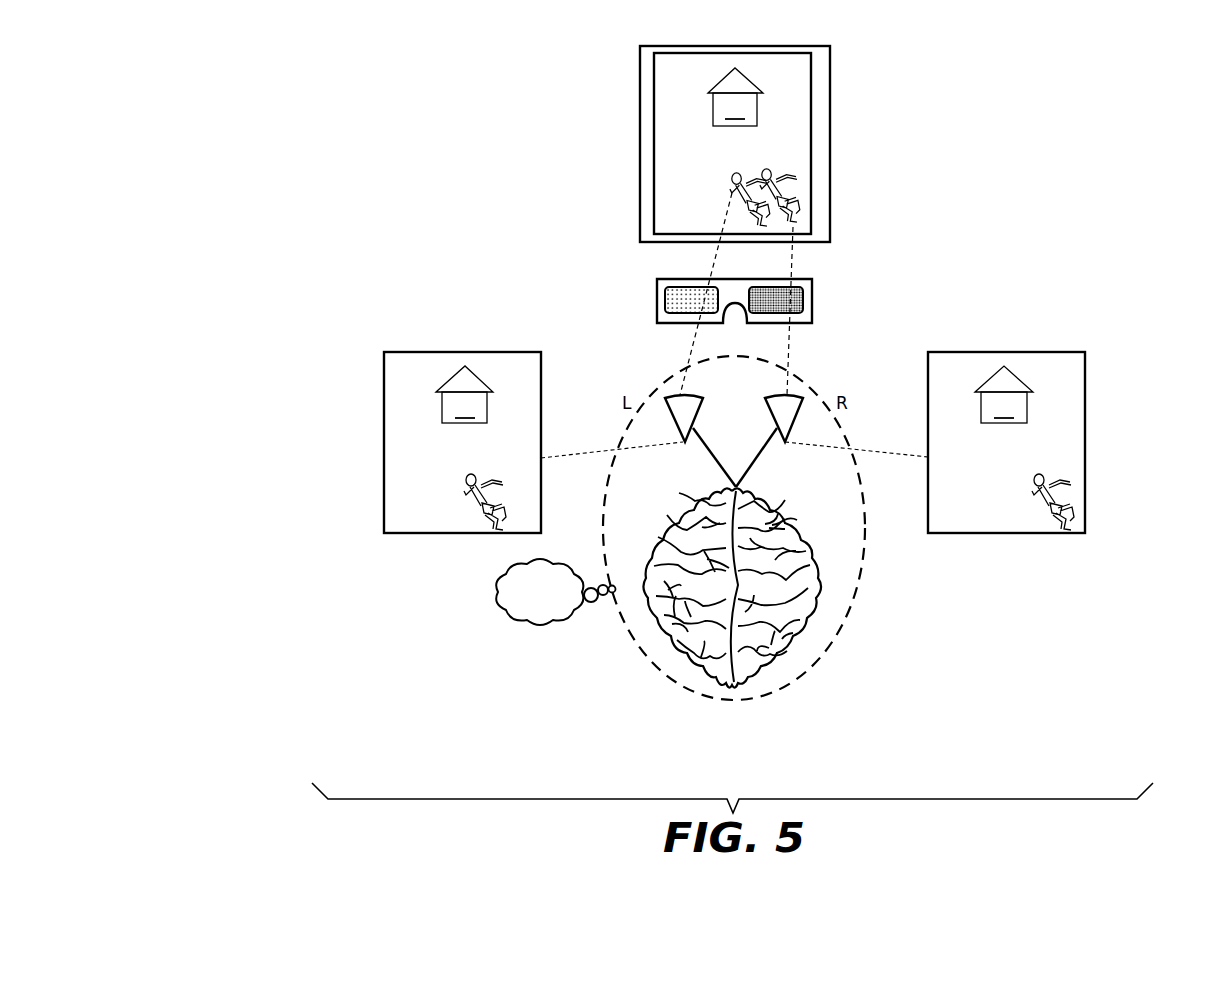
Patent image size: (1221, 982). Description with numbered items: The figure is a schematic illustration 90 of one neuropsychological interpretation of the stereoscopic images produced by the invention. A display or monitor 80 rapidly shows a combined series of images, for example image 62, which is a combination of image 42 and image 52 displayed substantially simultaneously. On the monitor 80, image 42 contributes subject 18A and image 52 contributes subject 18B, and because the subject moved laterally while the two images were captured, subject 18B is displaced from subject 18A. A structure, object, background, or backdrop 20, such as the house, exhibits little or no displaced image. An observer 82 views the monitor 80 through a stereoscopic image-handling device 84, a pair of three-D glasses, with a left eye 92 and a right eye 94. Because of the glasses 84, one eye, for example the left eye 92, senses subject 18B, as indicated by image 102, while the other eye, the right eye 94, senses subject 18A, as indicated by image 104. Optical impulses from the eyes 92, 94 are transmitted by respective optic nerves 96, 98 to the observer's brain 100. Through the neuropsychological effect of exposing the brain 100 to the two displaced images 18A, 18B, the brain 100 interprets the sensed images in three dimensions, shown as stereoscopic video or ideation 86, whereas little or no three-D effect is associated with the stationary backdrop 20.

The schematic illustration 90 is at (378, 100).
The display or monitor 80 is at (825, 221).
The image 62 is at (662, 87).
The structure, object, background, or backdrop 20 is at (734, 245).
The subject image 18A is at (780, 178).
The subject image 18B is at (742, 178).
The stereoscopic image-handling device 84 is at (657, 303).
The left eye 92 is at (678, 398).
The right eye 94 is at (792, 398).
The optic nerve 96 is at (715, 459).
The optic nerve 98 is at (757, 459).
The brain 100 is at (662, 553).
The observer 82 is at (643, 652).
The stereoscopic video ideation 86 is at (497, 596).
The image 42 is at (398, 352).
The image 52 is at (946, 357).
The image 102 is at (410, 430).
The image 104 is at (1060, 430).